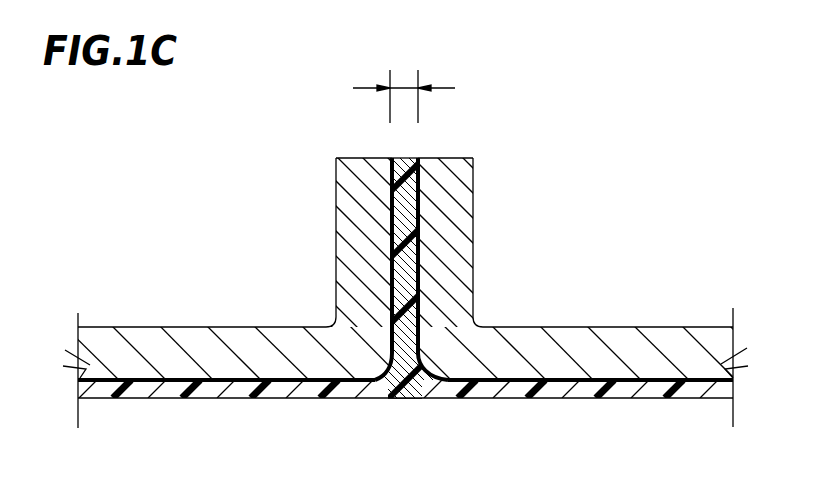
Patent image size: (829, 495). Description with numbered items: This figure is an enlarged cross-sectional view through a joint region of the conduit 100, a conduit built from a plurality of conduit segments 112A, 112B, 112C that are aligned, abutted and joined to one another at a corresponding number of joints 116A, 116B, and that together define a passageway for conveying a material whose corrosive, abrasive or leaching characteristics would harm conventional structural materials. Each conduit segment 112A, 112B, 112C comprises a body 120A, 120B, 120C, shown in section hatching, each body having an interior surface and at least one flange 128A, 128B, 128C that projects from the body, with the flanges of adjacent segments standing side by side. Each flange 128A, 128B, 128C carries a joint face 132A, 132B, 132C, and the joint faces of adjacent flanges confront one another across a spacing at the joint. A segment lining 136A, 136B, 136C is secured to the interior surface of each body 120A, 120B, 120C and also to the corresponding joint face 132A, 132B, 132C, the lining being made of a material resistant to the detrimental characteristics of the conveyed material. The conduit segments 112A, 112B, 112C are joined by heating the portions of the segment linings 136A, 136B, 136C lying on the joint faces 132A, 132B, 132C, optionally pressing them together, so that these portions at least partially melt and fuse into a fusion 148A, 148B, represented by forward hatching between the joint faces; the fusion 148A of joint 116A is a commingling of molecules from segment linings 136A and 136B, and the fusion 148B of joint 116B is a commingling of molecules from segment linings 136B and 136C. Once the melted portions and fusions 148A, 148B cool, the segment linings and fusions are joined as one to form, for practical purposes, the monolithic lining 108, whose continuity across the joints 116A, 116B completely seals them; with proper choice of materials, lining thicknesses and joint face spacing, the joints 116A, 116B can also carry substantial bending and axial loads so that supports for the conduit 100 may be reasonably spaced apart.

The conduit 100 is at (633, 110).
The monolithic lining 108 is at (462, 409).
The conduit segment 112A is at (194, 325).
The conduit segment 112B is at (404, 293).
The conduit segment 112C is at (615, 324).
The joint 116A is at (457, 67).
The joint 116B is at (447, 67).
The body 120A is at (290, 337).
The body 120B is at (399, 311).
The body 120C is at (520, 337).
The flange 128A is at (346, 226).
The flange 128B is at (415, 247).
The flange 128C is at (450, 224).
The joint face 132A is at (402, 158).
The joint face 132B is at (417, 250).
The joint face 132C is at (410, 158).
The segment lining 136A is at (140, 392).
The segment lining 136B is at (405, 419).
The segment lining 136C is at (690, 392).
The fusion 148A is at (402, 311).
The fusion 148B is at (404, 396).